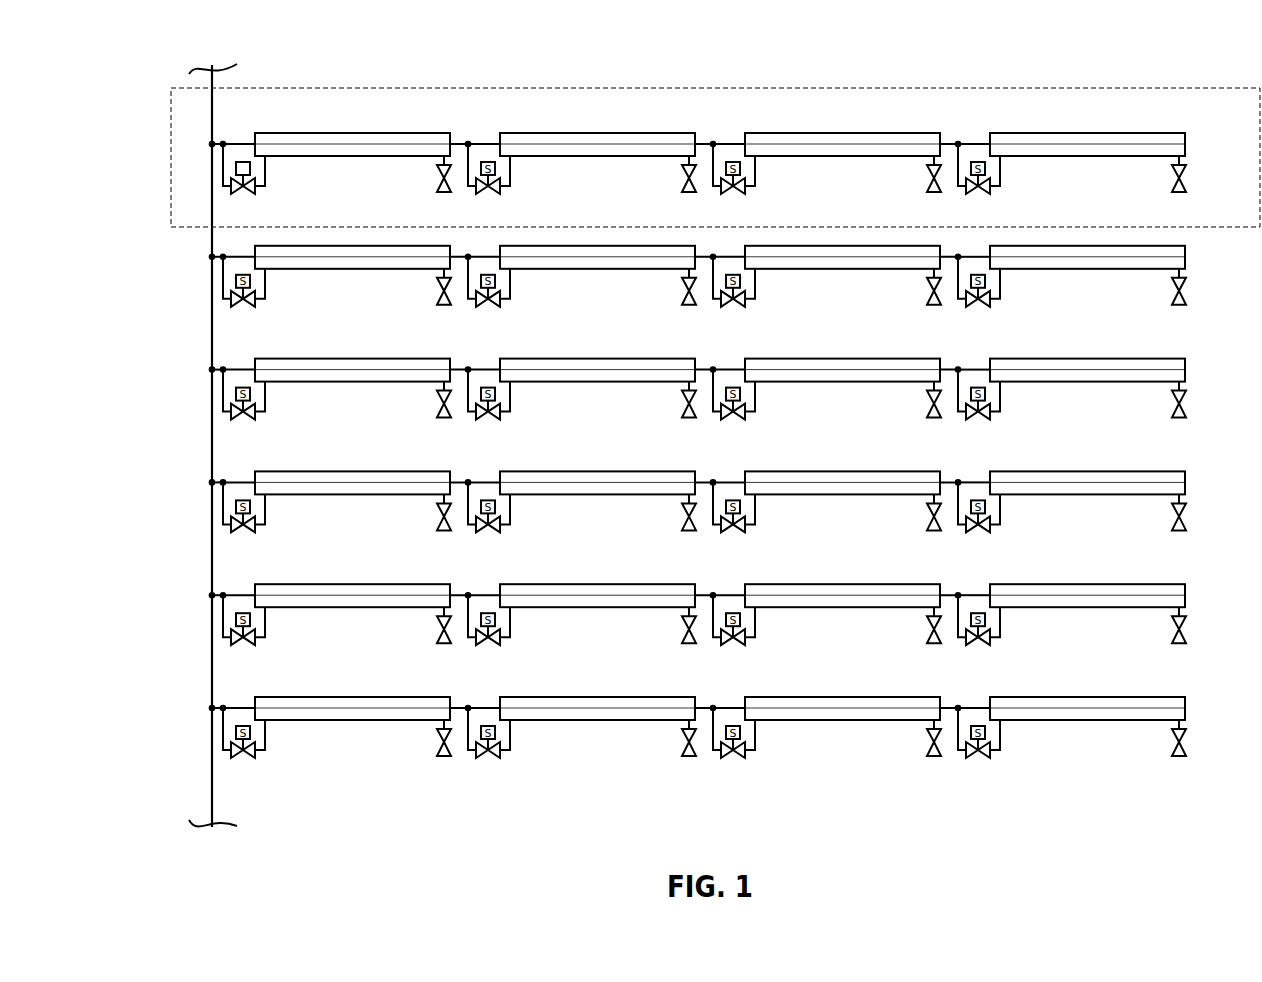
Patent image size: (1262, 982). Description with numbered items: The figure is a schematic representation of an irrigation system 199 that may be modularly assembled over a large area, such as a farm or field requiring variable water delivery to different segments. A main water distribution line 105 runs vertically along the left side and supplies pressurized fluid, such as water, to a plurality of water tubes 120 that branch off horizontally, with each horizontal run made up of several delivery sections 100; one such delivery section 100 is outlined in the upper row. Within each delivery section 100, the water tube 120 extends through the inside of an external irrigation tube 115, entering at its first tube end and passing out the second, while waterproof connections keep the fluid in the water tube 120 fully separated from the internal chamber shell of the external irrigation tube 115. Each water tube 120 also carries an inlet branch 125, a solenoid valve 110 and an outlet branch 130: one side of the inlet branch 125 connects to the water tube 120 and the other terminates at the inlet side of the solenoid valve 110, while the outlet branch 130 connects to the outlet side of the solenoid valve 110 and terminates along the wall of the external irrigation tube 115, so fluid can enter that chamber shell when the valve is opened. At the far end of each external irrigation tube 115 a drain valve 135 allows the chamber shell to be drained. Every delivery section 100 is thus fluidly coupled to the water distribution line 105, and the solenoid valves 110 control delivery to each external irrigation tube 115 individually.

The delivery section 100 is at (912, 85).
The main water distribution line 105 is at (212, 313).
The solenoid valve 110 is at (232, 189).
The external irrigation tube 115 is at (359, 132).
The water tube 120 is at (481, 141).
The inlet branch 125 is at (958, 140).
The outlet branch 130 is at (998, 188).
The drain valve 135 is at (1183, 182).
The irrigation system 199 is at (130, 410).